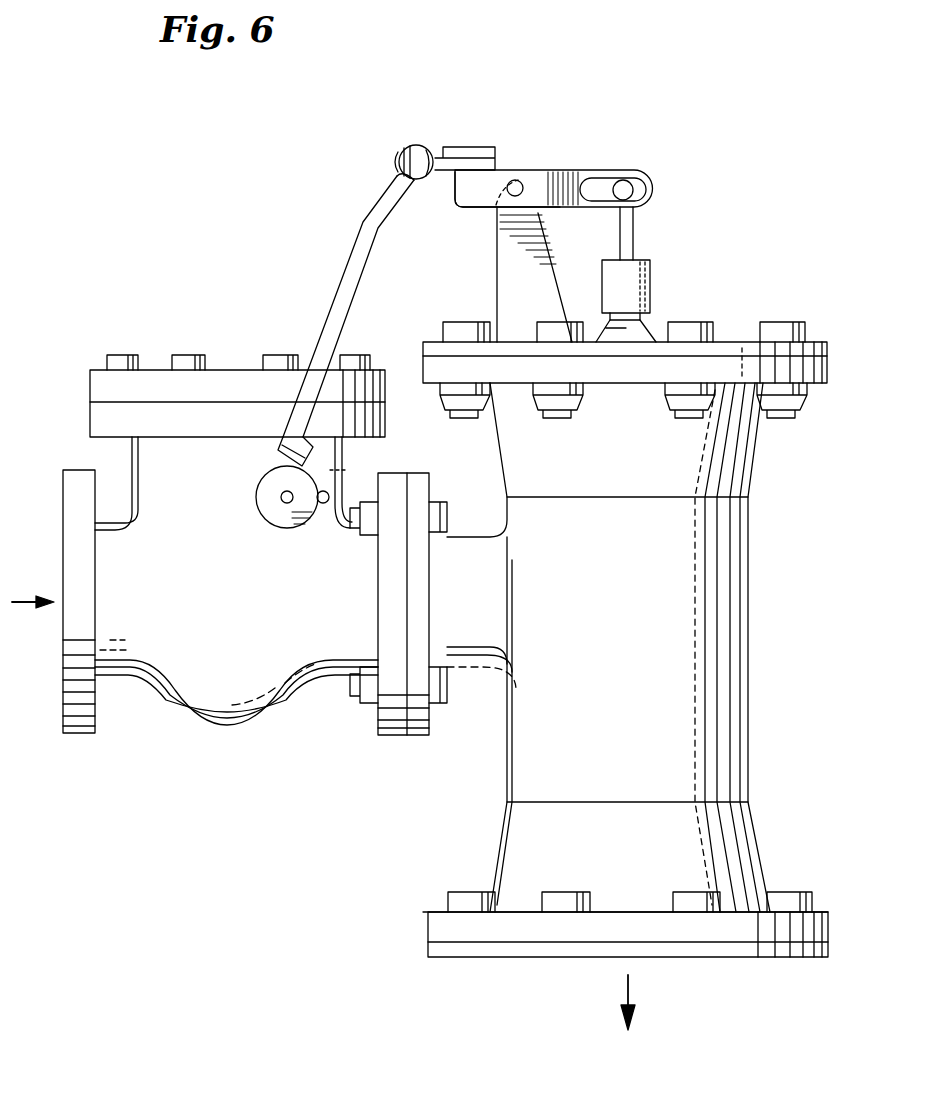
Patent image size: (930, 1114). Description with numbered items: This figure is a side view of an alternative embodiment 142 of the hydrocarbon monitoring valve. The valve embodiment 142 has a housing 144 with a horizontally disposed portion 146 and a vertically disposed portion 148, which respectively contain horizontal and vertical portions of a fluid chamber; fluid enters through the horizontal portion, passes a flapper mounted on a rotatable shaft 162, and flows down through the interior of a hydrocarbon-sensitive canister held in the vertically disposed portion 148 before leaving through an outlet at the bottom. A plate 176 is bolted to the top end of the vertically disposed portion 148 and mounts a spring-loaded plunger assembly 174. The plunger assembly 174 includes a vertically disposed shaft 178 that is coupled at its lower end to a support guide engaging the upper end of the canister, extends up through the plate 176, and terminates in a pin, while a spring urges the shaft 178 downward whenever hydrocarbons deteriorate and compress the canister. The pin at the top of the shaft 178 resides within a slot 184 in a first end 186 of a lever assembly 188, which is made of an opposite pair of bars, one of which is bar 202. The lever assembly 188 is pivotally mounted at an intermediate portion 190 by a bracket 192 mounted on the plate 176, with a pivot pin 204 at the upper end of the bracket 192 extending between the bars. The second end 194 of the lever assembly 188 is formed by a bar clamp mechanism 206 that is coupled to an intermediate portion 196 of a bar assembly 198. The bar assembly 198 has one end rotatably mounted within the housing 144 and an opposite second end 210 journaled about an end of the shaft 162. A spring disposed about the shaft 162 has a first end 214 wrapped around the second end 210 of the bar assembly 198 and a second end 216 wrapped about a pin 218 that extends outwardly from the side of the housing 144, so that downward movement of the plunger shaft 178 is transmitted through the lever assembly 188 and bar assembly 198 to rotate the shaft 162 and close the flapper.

The alternative embodiment of the hydrocarbon monitoring valve 142 is at (450, 806).
The housing 144 is at (398, 735).
The horizontally disposed portion of the housing 146 is at (238, 712).
The vertically disposed portion of the housing 148 is at (740, 690).
The rotatable shaft 162 is at (282, 502).
The spring-loaded plunger assembly 174 is at (650, 274).
The plate 176 is at (728, 342).
The vertically disposed shaft 178 is at (628, 232).
The slot 184 is at (606, 186).
The first end of the lever assembly 186 is at (655, 190).
The lever assembly 188 is at (572, 176).
The intermediate portion of the lever assembly 190 is at (488, 210).
The bracket 192 is at (500, 293).
The second end of the lever assembly 194 is at (440, 175).
The intermediate portion of the bar assembly 196 is at (395, 160).
The bar assembly 198 is at (348, 270).
The bar of the lever assembly 202 is at (558, 196).
The pivot pin 204 is at (516, 178).
The bar clamp mechanism 206 is at (425, 150).
The second end of the bar assembly 210 is at (290, 446).
The first end of the spring 214 is at (272, 470).
The second end of the spring 216 is at (330, 490).
The pin 218 is at (326, 520).